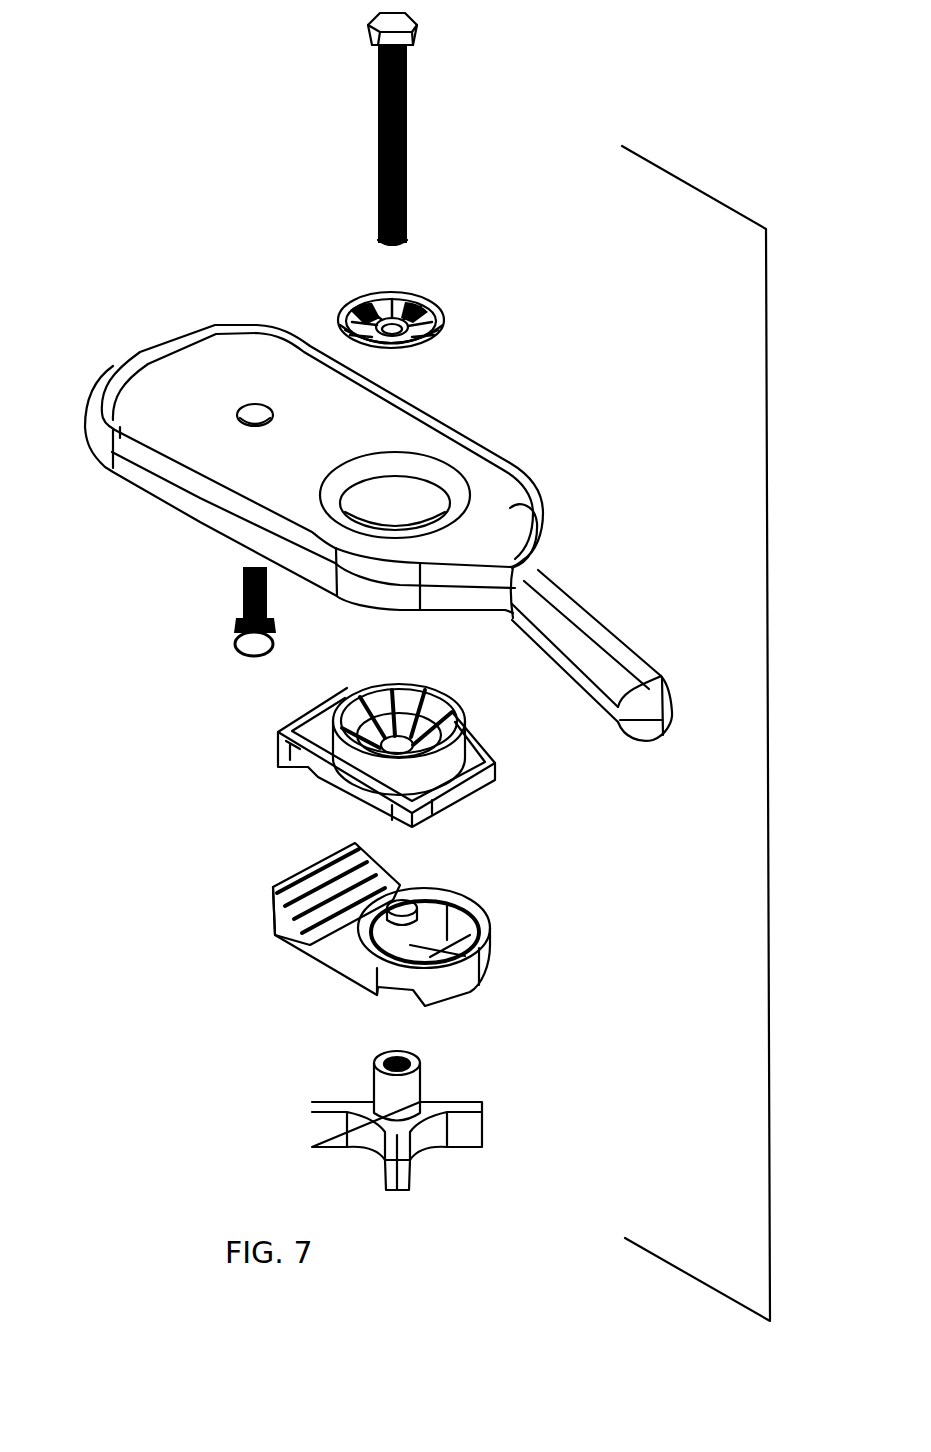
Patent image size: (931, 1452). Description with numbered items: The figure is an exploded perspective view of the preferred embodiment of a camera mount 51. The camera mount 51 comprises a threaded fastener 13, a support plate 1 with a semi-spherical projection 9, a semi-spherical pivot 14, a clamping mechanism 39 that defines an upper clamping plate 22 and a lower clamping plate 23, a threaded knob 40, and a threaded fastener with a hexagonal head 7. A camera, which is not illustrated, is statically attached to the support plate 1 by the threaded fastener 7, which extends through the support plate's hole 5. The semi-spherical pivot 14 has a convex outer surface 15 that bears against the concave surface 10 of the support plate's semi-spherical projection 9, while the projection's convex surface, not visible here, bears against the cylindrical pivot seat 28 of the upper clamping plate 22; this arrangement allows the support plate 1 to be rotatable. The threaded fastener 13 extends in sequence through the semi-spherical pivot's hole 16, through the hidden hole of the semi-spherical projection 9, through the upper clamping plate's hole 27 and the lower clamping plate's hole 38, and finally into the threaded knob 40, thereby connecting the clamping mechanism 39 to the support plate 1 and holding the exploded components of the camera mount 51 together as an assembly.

The support plate 1 is at (378, 517).
The support plate's hole 5 is at (257, 403).
The threaded fastener with a hexagonal head 7 is at (226, 595).
The semi-spherical projection 9 is at (397, 486).
The concave surface 10 is at (399, 526).
The threaded fastener 13 is at (358, 80).
The semi-spherical pivot 14 is at (391, 309).
The convex outer surface 15 is at (410, 346).
The semi-spherical pivot's hole 16 is at (400, 306).
The upper clamping plate 22 is at (398, 749).
The lower clamping plate 23 is at (415, 929).
The upper clamping plate's hole 27 is at (425, 727).
The cylindrical pivot seat 28 is at (395, 735).
The lower clamping plate's hole 38 is at (400, 903).
The clamping mechanism 39 is at (268, 860).
The threaded knob 40 is at (350, 1076).
The camera mount 51 is at (773, 833).